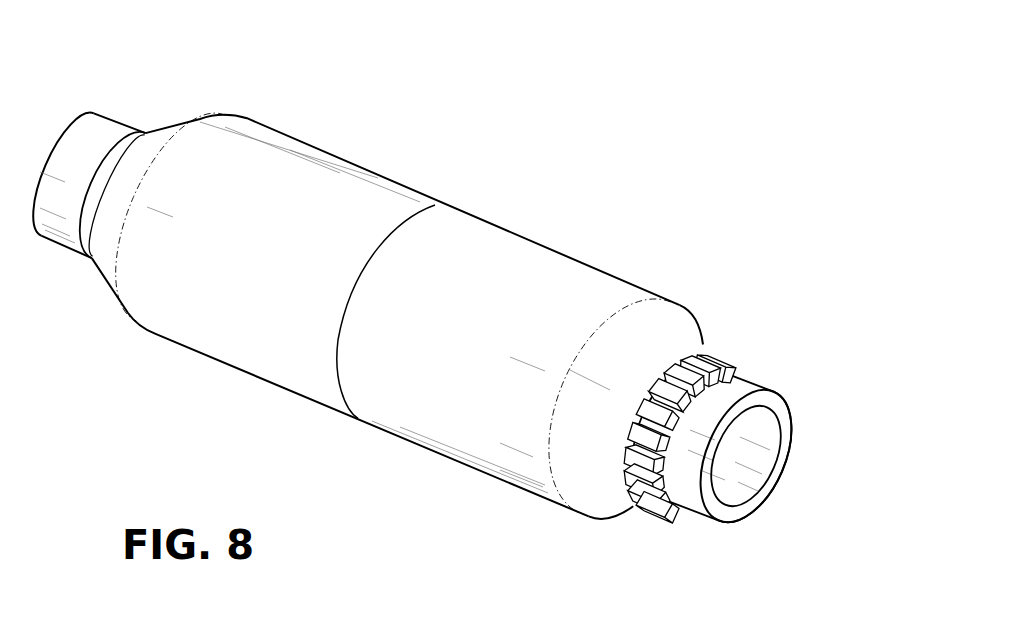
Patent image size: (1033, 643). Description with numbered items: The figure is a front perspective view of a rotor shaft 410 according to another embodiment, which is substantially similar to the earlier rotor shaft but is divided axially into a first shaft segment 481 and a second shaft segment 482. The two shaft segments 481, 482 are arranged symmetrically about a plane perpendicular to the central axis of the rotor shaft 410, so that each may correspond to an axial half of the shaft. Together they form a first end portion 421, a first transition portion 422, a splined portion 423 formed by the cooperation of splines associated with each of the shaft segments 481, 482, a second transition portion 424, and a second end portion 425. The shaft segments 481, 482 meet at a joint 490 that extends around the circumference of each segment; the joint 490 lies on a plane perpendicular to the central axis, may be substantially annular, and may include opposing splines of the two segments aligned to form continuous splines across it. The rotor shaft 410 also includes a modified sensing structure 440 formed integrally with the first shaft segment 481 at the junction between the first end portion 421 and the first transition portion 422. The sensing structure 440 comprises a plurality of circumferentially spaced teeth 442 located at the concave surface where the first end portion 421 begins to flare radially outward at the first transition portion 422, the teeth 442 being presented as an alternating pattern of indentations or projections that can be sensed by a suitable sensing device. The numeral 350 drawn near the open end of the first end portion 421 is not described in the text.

The rotor shaft 410 is at (383, 130).
The first end portion 421 is at (711, 537).
The first transition portion 422 is at (594, 530).
The splined portion 423 is at (395, 452).
The second transition portion 424 is at (98, 290).
The second end portion 425 is at (93, 110).
The sensing structure 440 is at (712, 397).
The teeth 442 is at (716, 354).
The first shaft segment 481 is at (652, 272).
The second shaft segment 482 is at (243, 93).
The joint 490 is at (434, 203).
The outlet bore 350 is at (753, 472).